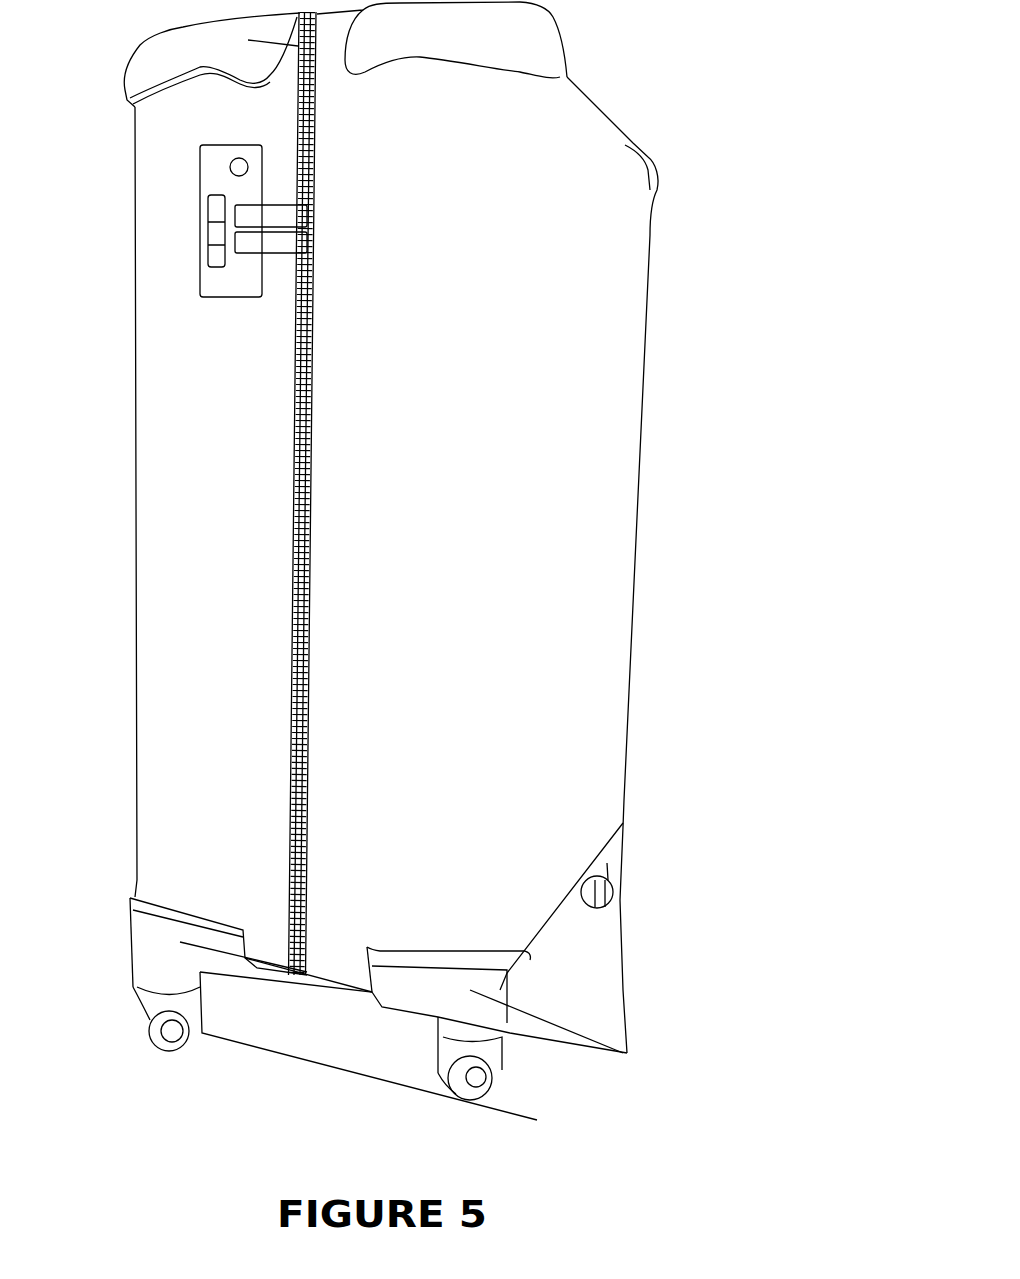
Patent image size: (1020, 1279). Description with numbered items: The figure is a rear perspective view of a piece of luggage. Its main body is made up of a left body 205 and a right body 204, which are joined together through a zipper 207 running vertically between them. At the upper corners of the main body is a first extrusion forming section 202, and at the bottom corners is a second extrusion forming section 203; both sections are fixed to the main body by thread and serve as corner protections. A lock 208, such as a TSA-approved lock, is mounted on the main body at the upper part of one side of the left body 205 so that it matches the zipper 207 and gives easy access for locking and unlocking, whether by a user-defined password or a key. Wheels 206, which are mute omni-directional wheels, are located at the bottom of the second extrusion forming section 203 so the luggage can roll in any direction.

The first extrusion forming section 202 is at (317, 48).
The second extrusion forming section 203 is at (677, 1055).
The right body 204 is at (575, 537).
The left body 205 is at (202, 514).
The wheels 206 is at (607, 905).
The zipper 207 is at (291, 598).
The lock 208 is at (240, 297).